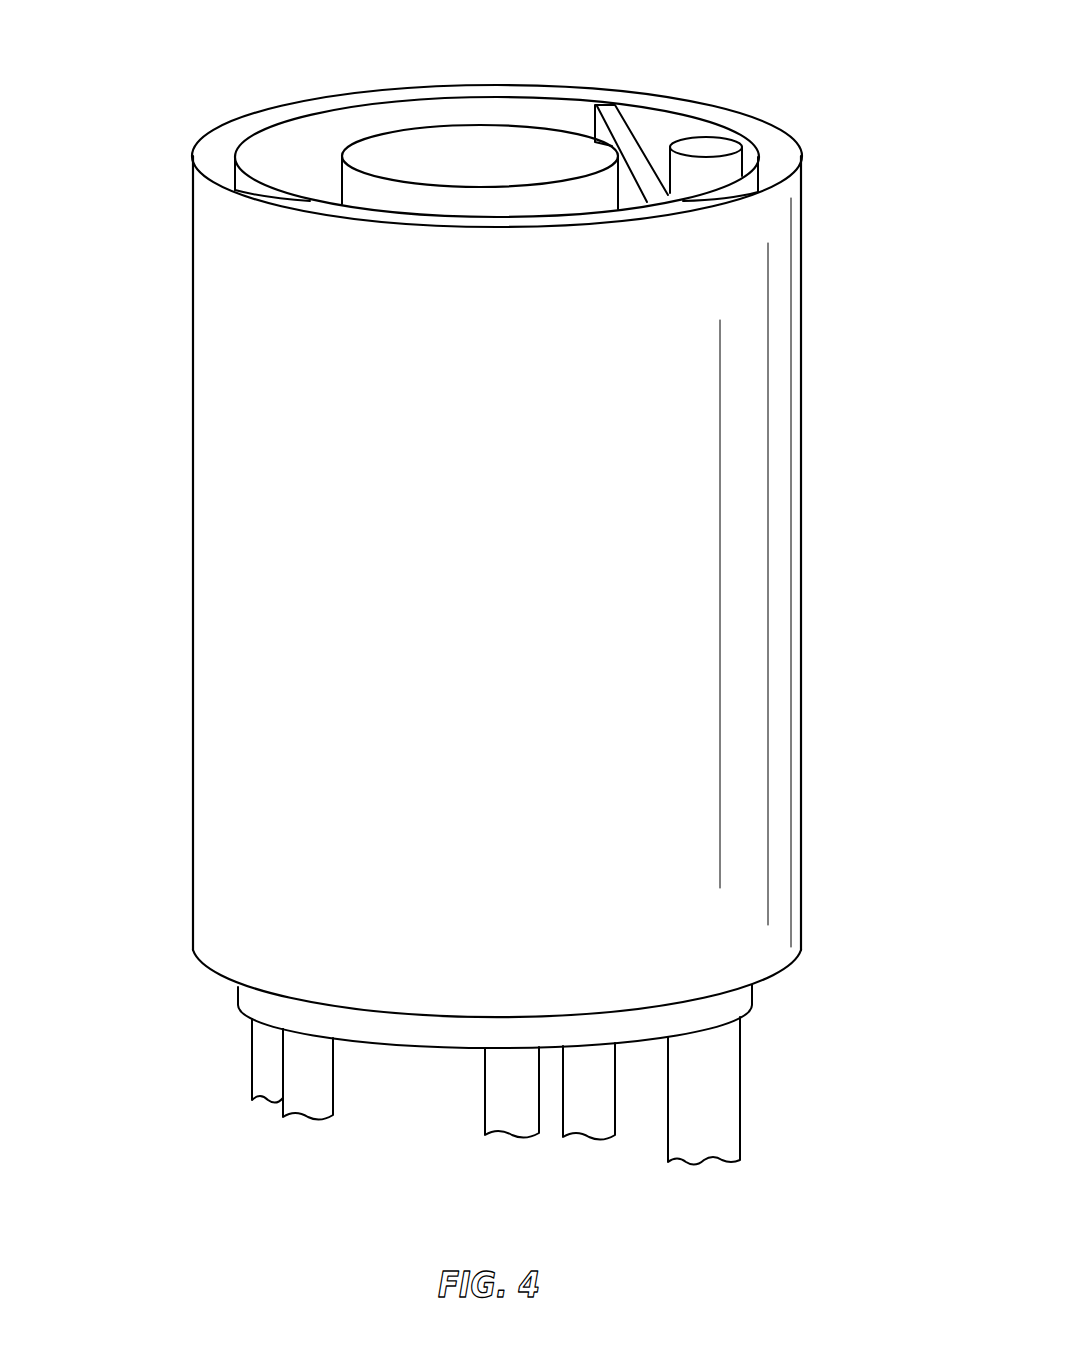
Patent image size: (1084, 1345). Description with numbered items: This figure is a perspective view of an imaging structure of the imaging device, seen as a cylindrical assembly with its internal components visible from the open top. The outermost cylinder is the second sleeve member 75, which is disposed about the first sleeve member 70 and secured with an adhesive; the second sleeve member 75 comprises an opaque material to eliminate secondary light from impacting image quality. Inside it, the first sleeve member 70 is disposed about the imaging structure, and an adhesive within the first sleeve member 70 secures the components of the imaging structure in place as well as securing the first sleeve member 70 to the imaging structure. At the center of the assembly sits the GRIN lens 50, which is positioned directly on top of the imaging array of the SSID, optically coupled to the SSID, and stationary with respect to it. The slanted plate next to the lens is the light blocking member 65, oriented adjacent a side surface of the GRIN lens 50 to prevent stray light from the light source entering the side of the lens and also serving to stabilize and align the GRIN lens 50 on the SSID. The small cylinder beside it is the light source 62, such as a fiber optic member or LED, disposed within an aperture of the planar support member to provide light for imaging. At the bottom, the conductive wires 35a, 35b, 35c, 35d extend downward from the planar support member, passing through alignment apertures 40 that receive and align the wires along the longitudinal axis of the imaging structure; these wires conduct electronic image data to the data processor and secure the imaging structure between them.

The second sleeve member 75 is at (194, 143).
The first sleeve member 70 is at (262, 128).
The GRIN lens 50 is at (518, 143).
The light blocking member 65 is at (625, 137).
The light source 62 is at (710, 146).
The alignment apertures 40 is at (725, 1004).
The conductive wire 35a is at (600, 1095).
The conductive wire 35b is at (485, 1102).
The conductive wire 35c is at (320, 1065).
The conductive wire 35d is at (257, 1055).